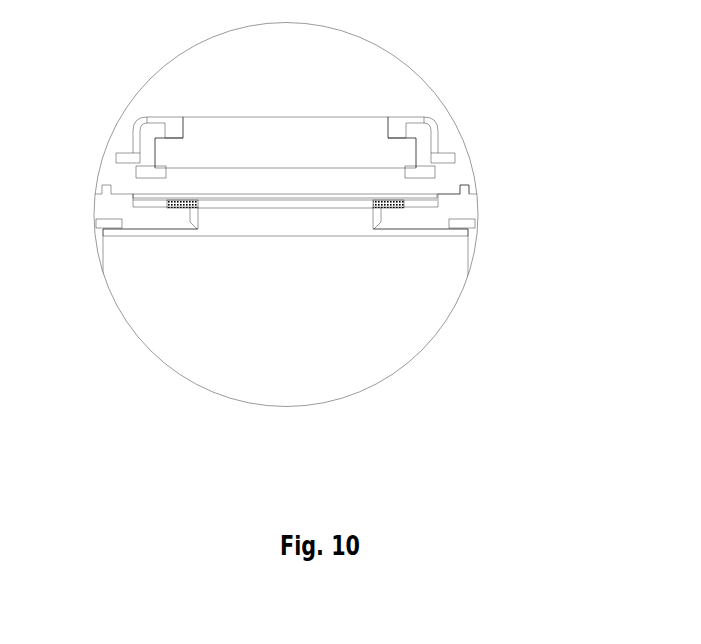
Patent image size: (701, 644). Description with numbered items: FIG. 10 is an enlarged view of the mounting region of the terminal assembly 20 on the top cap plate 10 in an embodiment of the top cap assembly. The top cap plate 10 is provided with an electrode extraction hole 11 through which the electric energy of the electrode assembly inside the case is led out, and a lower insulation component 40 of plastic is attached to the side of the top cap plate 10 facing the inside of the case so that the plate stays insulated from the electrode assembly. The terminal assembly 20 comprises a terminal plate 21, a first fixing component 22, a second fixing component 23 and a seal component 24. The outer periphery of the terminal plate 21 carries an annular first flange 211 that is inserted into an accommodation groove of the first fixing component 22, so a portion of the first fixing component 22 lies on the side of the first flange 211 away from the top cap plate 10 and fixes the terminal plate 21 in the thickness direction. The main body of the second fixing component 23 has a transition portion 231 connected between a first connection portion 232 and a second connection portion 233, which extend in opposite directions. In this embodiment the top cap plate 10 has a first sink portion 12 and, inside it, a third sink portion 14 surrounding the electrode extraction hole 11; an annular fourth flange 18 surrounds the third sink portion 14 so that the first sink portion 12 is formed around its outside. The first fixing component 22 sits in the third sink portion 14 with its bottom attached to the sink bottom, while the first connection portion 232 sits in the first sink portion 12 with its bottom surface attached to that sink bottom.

The top cap plate 10 is at (113, 208).
The electrode extraction hole 11 is at (272, 216).
The first sink portion 12 is at (440, 172).
The third sink portion 14 is at (148, 203).
The fourth flange 18 is at (447, 190).
The terminal assembly 20 is at (367, 73).
The terminal plate 21 is at (237, 132).
The first flange 211 is at (172, 152).
The first fixing component 22 is at (400, 118).
The second fixing component 23 is at (577, 94).
The transition portion 231 is at (437, 140).
The first connection portion 232 is at (445, 158).
The second connection portion 233 is at (437, 123).
The seal component 24 is at (172, 208).
The lower insulation component 40 is at (403, 236).